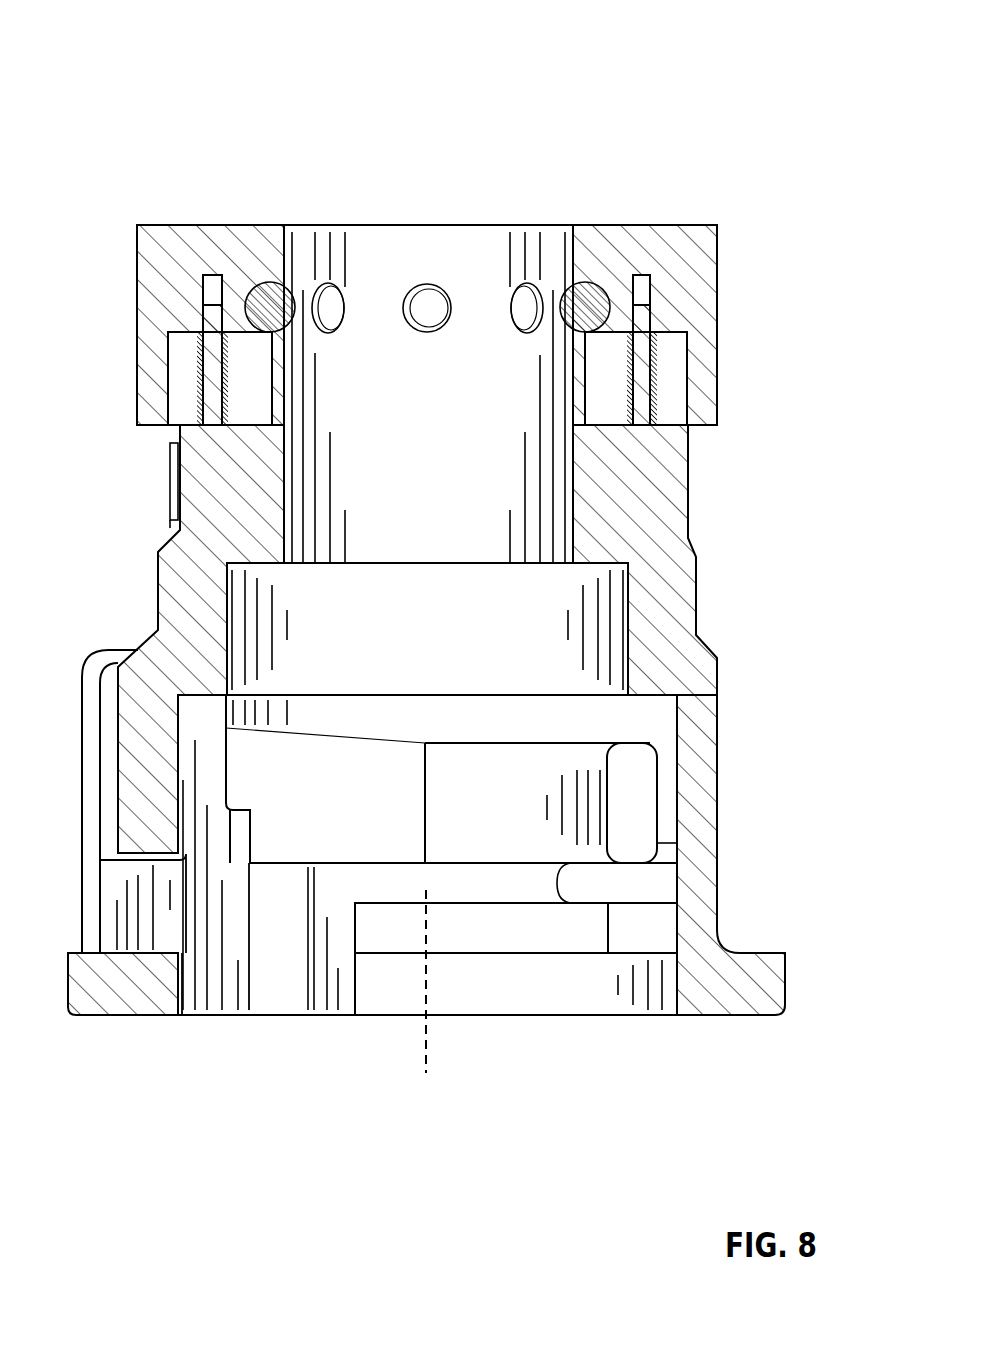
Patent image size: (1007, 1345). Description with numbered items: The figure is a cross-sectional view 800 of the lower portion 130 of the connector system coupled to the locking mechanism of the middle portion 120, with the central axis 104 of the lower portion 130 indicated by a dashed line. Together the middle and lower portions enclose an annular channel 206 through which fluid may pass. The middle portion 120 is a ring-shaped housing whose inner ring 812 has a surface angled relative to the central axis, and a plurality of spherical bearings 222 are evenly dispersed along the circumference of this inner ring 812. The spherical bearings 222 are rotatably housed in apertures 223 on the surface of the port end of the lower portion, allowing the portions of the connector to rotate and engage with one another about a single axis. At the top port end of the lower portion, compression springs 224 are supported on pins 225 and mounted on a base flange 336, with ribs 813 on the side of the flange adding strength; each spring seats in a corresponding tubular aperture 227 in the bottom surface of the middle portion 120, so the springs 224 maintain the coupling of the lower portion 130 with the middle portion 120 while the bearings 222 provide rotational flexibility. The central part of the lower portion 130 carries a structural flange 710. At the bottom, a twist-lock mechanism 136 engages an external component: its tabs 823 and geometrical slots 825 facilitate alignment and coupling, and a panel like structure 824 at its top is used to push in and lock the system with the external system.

The cross-sectional view 800 is at (704, 55).
The middle portion 120 is at (732, 348).
The compression springs 224 is at (200, 400).
The pins 225 is at (205, 330).
The tubular apertures 227 is at (209, 274).
The inner ring 812 is at (620, 253).
The spherical bearings 222 is at (258, 283).
The apertures 223 is at (323, 283).
The annular channel 206 is at (413, 475).
The base flange 336 is at (673, 520).
The ribs 813 is at (168, 490).
The flange 710 is at (675, 632).
The lower portion 130 is at (750, 870).
The tabs 823 is at (160, 930).
The panel like structure 824 is at (540, 720).
The geometrical slots 825 is at (553, 882).
The twist-lock mechanism 136 is at (702, 786).
The central axis 104 is at (426, 1049).